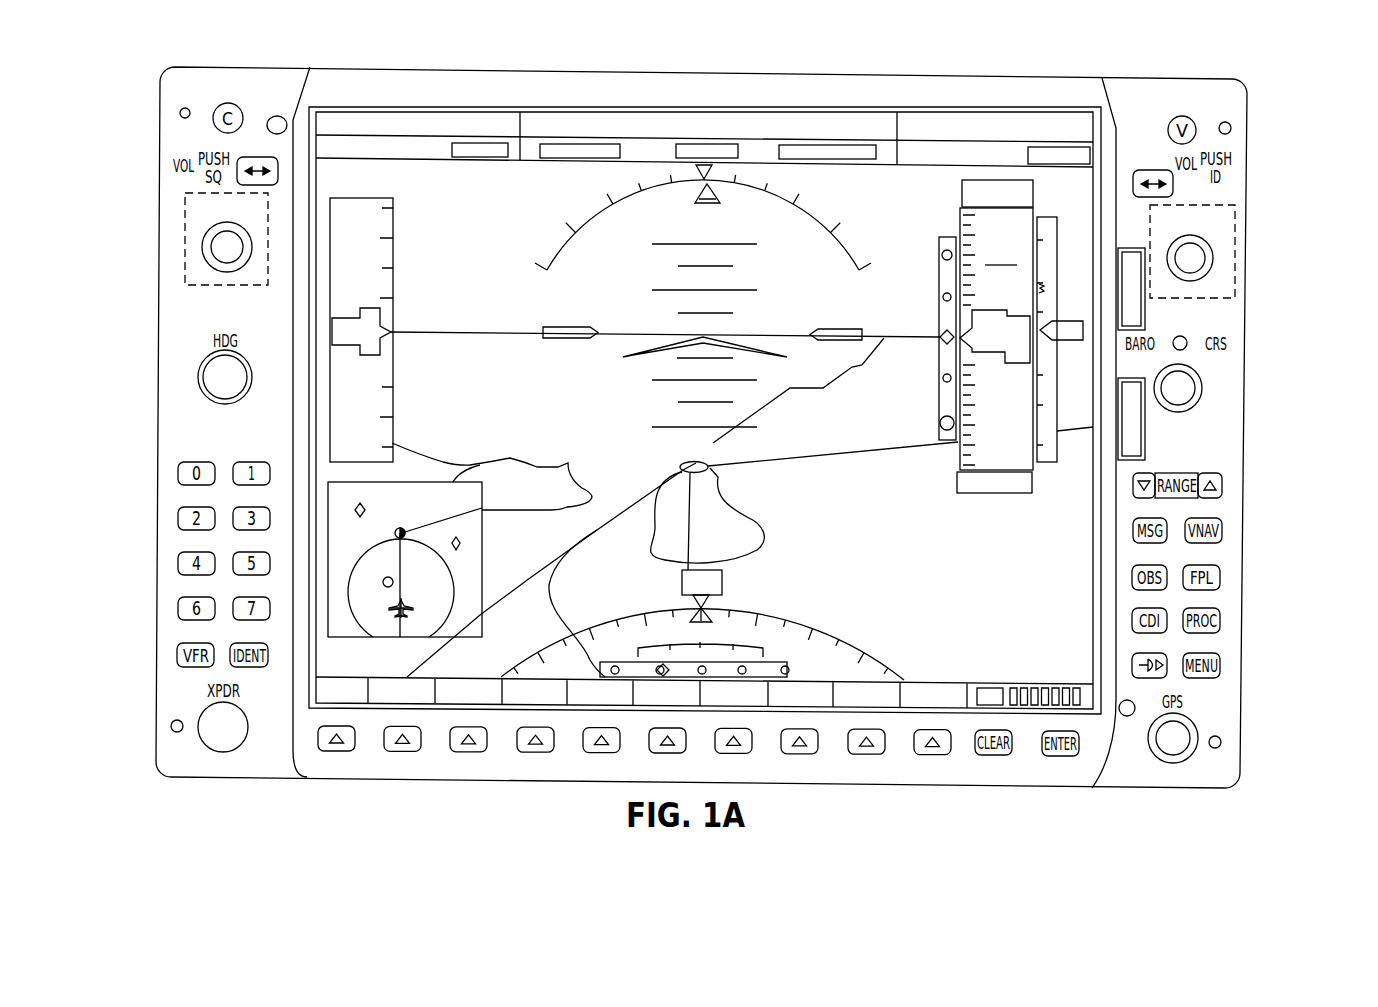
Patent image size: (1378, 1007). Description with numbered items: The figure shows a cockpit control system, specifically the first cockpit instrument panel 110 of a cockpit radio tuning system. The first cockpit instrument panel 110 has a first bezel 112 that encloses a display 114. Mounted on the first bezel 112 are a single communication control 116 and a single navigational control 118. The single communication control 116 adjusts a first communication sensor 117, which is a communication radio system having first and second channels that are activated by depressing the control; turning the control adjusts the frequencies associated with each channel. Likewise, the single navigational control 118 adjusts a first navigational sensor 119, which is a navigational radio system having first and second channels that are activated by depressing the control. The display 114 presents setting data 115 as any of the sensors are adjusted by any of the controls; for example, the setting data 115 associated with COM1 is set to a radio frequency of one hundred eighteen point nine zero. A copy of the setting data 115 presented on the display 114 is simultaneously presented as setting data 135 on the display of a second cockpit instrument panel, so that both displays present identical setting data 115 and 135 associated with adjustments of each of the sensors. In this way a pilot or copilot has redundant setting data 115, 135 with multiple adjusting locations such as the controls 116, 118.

The first cockpit instrument panel 110 is at (1243, 598).
The first bezel 112 is at (893, 78).
The display 114 is at (901, 575).
The setting data 115 is at (455, 123).
The single communication control 116 is at (213, 252).
The first communication sensor 117 is at (183, 238).
The single navigational control 118 is at (1203, 264).
The first navigational sensor 119 is at (1233, 252).
The setting data 135 is at (531, 162).